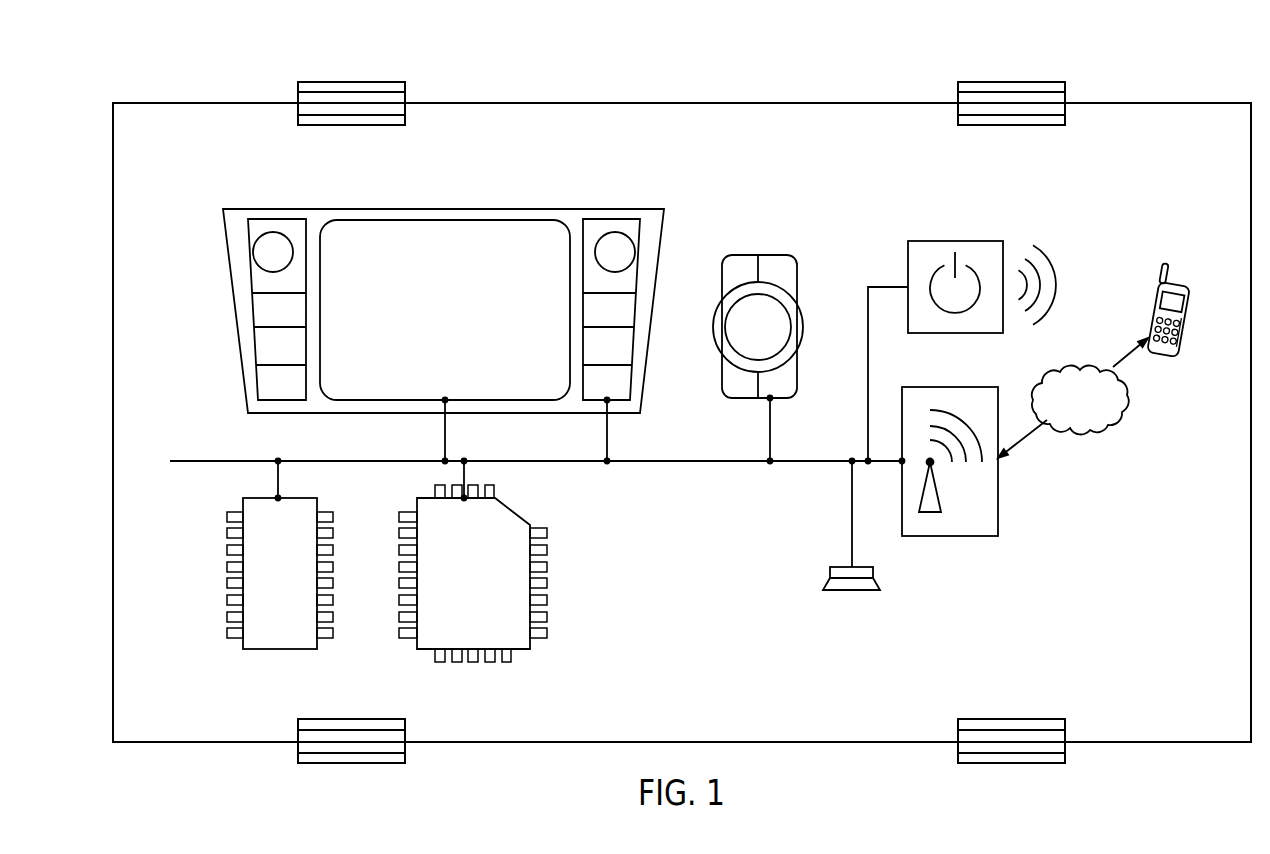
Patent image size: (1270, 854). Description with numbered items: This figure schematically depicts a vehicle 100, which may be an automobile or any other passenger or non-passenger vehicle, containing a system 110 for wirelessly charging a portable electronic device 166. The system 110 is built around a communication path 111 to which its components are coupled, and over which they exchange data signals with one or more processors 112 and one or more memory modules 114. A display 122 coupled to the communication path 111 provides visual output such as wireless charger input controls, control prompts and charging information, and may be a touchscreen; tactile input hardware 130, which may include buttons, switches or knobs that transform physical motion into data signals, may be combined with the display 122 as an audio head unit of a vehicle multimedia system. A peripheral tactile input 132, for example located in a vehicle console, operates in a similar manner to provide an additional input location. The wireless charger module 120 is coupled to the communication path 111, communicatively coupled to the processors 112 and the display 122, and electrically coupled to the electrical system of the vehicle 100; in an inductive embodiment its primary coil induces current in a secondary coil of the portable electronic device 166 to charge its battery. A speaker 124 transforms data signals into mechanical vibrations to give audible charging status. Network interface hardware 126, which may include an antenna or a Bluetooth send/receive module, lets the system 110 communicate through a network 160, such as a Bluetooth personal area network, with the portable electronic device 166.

The vehicle 100 is at (780, 90).
The system 110 is at (1067, 227).
The communication path 111 is at (200, 463).
The one or more processors 112 is at (423, 651).
The one or more memory modules 114 is at (278, 651).
The wireless charger module 120 is at (960, 241).
The display 122 is at (447, 233).
The speaker 124 is at (857, 592).
The network interface hardware 126 is at (952, 386).
The tactile input hardware 130 is at (248, 227).
The peripheral tactile input 132 is at (748, 255).
The network 160 is at (1082, 430).
The portable electronic device 166 is at (1178, 283).